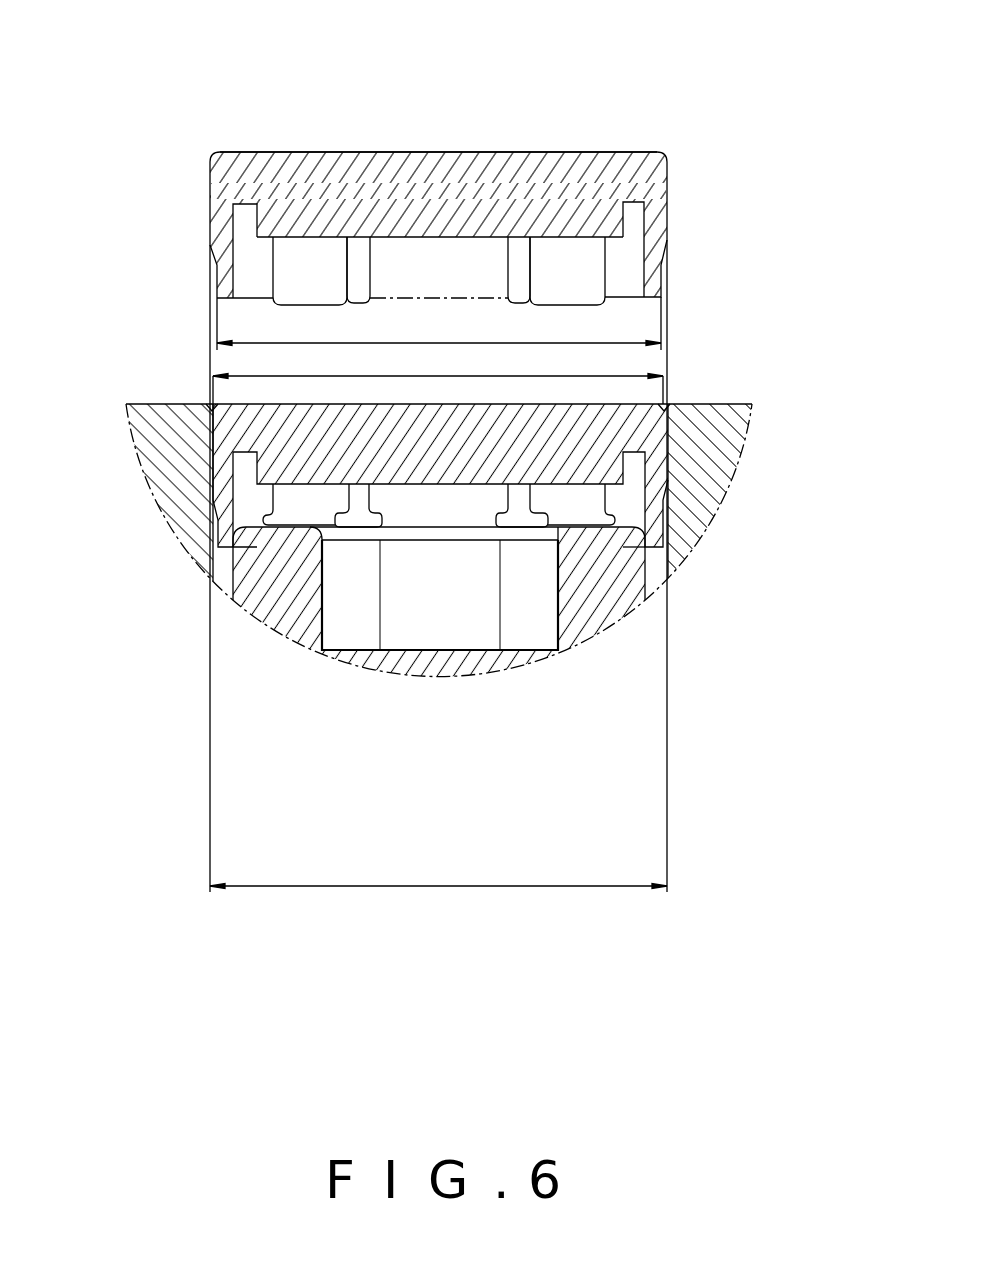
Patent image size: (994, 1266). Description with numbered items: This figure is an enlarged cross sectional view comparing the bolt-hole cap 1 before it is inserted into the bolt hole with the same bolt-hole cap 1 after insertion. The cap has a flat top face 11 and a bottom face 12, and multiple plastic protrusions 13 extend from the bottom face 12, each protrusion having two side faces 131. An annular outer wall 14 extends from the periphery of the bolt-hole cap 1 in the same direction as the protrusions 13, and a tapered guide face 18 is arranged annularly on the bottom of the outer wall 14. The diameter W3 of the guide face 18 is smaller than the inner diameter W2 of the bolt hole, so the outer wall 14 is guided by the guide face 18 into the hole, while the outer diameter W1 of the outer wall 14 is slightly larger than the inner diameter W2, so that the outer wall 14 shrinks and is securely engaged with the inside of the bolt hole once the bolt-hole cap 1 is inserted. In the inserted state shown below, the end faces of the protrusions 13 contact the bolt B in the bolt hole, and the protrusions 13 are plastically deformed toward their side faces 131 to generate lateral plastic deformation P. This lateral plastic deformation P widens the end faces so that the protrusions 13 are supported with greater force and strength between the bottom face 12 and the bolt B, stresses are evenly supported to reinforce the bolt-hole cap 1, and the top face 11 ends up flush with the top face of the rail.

The bolt-hole cap 1 is at (574, 178).
The top face 11 is at (533, 153).
The bottom face 12 is at (418, 232).
The protrusions 13 is at (363, 265).
The side faces 131 is at (288, 278).
The annular outer wall 14 is at (213, 427).
The guide face 18 is at (210, 260).
The lateral plastic deformation P is at (383, 523).
The bolt B is at (450, 672).
The outer diameter of the outer wall W1 is at (315, 886).
The inner diameter of the bolt hole W2 is at (287, 376).
The diameter of the guide face W3 is at (275, 343).